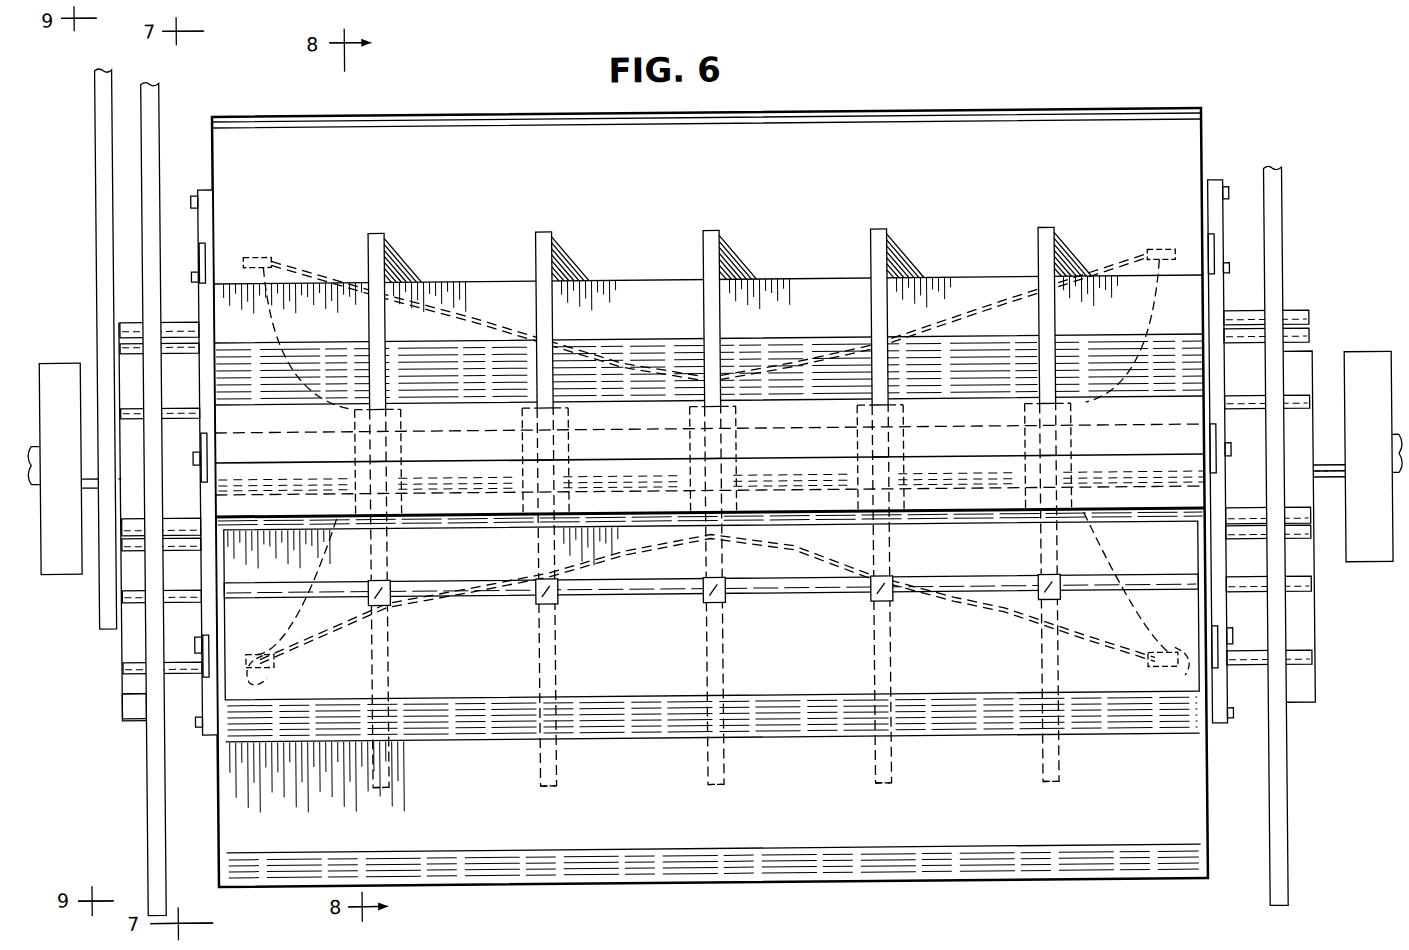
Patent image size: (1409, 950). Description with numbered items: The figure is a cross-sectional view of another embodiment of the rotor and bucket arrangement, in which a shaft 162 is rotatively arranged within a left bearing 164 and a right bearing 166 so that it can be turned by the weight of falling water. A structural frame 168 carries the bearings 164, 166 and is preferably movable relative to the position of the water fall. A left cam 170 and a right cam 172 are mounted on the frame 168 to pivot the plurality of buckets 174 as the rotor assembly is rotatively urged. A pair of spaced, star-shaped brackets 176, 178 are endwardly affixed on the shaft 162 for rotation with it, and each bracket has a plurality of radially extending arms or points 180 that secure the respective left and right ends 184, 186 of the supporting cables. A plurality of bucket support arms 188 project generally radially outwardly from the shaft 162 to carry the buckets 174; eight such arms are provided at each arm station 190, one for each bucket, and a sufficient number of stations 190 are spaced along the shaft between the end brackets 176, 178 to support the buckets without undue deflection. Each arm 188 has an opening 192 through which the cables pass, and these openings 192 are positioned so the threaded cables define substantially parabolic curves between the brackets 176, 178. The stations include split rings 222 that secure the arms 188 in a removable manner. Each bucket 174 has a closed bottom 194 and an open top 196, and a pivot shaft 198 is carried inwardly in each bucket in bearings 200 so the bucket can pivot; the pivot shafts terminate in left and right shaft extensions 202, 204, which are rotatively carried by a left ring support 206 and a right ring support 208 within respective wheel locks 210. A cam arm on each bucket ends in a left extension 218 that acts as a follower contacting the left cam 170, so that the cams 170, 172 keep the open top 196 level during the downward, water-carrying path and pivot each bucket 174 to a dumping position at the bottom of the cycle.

The shaft 162 is at (1328, 444).
The left bearing 164 is at (60, 574).
The right bearing 166 is at (1380, 574).
The structural frame 168 is at (1283, 758).
The left cam 170 is at (128, 703).
The right cam 172 is at (1304, 624).
The bucket 174 is at (960, 113).
The left star-shaped bracket 176 is at (293, 667).
The right star-shaped bracket 178 is at (1145, 637).
The radially extending arm or point 180 is at (278, 624).
The left cable end 184 is at (245, 683).
The right cable end 186 is at (1168, 680).
The bucket support arm 188 is at (1037, 773).
The arm station 190 is at (880, 232).
The opening 192 is at (708, 545).
The closed bottom 194 is at (1057, 138).
The open top 196 is at (798, 688).
The pivot shaft 198 is at (788, 605).
The bearing 200 is at (1049, 604).
The left shaft extension 202 is at (133, 603).
The right shaft extension 204 is at (1304, 593).
The left ring support 206 is at (196, 220).
The right ring support 208 is at (1226, 302).
The wheel lock 210 is at (1226, 660).
The left extension 218 is at (130, 322).
The split ring 222 is at (578, 480).